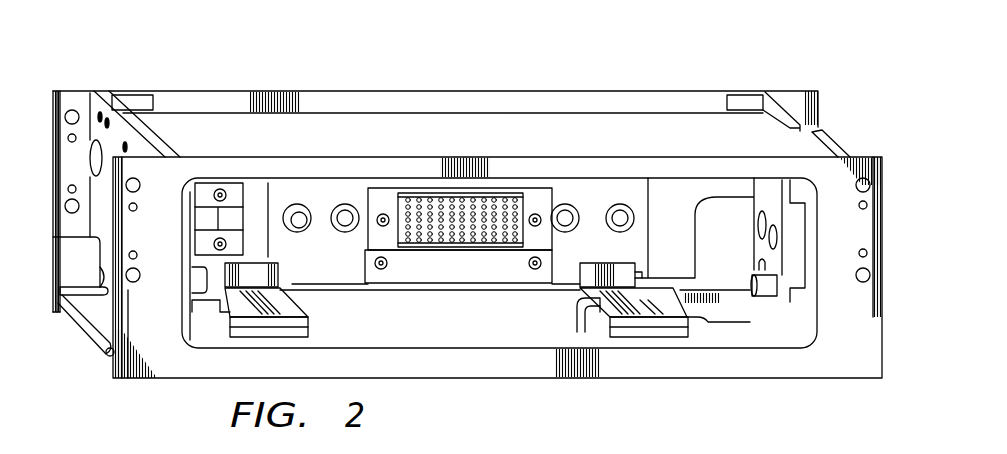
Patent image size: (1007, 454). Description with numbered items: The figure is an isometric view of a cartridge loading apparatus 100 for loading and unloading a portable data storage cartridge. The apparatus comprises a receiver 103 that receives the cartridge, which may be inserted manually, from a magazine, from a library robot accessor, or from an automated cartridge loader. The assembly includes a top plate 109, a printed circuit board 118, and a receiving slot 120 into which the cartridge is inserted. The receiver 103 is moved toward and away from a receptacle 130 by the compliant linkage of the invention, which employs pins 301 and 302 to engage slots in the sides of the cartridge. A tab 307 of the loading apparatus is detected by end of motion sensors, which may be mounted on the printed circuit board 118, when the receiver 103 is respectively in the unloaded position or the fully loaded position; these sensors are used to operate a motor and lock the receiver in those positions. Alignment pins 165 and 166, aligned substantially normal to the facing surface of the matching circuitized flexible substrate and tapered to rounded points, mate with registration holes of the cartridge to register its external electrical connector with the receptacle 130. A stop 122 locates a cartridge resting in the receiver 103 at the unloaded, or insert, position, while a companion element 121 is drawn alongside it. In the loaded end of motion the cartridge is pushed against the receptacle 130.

The cartridge loading apparatus 100 is at (358, 81).
The top plate 109 is at (695, 118).
The printed circuit board 118 is at (86, 332).
The receiving slot 120 is at (467, 340).
The left latch block 121 is at (279, 270).
The stop 122 is at (642, 275).
The receiver 103 is at (308, 310).
The receptacle 130 is at (420, 253).
The alignment pin 165 is at (635, 216).
The alignment pin 166 is at (307, 206).
The pin 301 is at (190, 264).
The pin 302 is at (768, 287).
The tab 307 is at (577, 315).